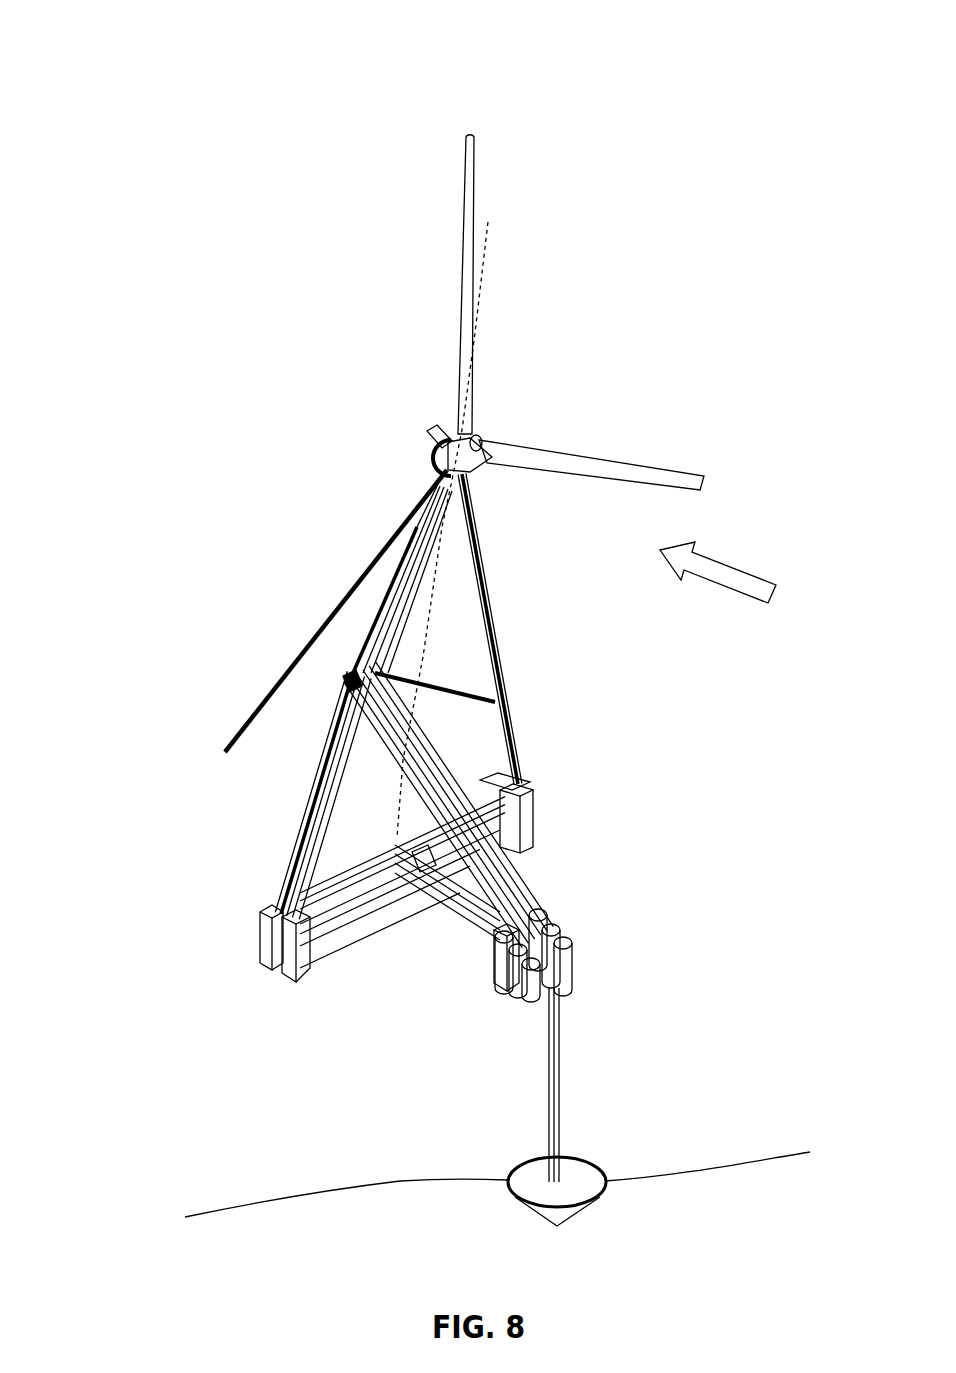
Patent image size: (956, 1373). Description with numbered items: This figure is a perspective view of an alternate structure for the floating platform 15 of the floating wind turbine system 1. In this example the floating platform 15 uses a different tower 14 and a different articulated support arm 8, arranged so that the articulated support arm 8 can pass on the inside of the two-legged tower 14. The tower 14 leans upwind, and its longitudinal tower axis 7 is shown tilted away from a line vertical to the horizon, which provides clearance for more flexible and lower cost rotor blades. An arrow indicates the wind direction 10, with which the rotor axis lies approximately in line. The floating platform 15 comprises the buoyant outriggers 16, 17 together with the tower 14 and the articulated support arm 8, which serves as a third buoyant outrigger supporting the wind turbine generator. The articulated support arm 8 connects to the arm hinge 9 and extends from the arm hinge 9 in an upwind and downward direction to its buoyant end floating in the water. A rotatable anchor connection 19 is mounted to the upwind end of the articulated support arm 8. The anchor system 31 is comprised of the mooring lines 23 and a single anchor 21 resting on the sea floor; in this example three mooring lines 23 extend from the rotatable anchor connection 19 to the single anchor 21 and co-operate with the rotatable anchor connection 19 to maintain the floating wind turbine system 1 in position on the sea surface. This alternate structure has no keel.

The floating wind turbine system 1 is at (505, 123).
The longitudinal tower axis 7 is at (498, 243).
The articulated support arm 8 is at (577, 910).
The arm hinge 9 is at (345, 683).
The wind direction 10 is at (735, 545).
The tower 14 is at (505, 601).
The floating platform 15 is at (218, 621).
The buoyant outrigger 16 is at (258, 897).
The buoyant outrigger 17 is at (553, 828).
The rotatable anchor connection 19 is at (559, 993).
The anchor 21 is at (613, 1158).
The mooring lines 23 is at (573, 1097).
The anchor system 31 is at (691, 1014).